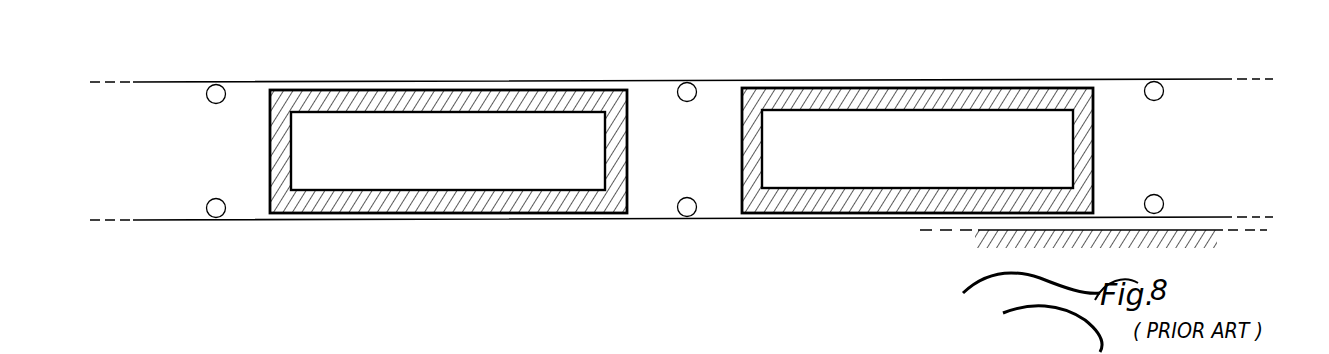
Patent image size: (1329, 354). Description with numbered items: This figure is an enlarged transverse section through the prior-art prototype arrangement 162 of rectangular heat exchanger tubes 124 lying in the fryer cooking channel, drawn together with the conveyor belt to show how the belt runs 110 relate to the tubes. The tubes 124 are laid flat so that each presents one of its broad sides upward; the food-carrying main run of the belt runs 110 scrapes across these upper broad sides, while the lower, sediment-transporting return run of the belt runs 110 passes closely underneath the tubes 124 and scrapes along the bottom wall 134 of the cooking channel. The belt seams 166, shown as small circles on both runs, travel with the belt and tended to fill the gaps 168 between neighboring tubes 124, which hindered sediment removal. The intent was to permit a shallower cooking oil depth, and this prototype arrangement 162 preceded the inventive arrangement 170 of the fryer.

The arrangement of rectangular heat exchanger tubes 162 is at (367, 80).
The belt conveyor runs 110 is at (820, 257).
The belt seams 166 is at (689, 82).
The rectangular heat exchanger tubes 124 is at (1056, 52).
The gaps between the tubes 168 is at (708, 156).
The bottom wall of the cooking channel 134 is at (978, 232).
The inventive arrangement 170 is at (350, 352).